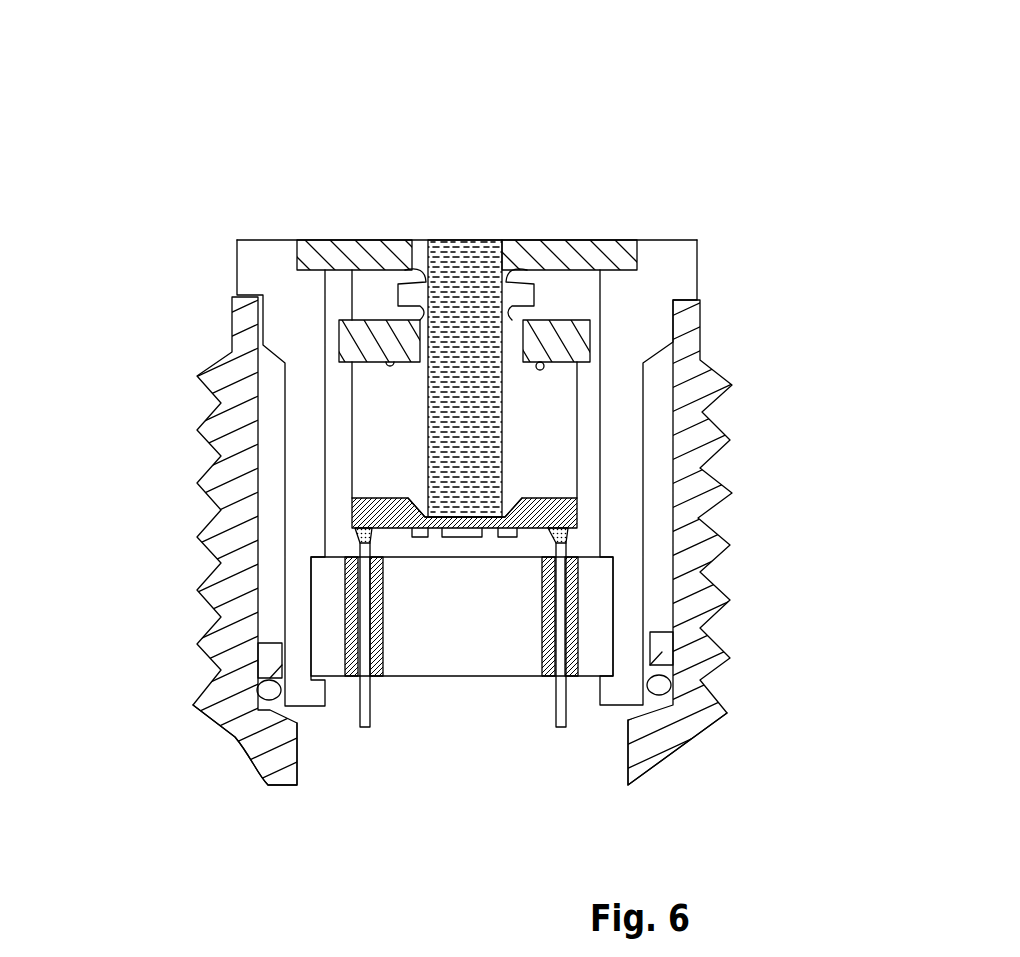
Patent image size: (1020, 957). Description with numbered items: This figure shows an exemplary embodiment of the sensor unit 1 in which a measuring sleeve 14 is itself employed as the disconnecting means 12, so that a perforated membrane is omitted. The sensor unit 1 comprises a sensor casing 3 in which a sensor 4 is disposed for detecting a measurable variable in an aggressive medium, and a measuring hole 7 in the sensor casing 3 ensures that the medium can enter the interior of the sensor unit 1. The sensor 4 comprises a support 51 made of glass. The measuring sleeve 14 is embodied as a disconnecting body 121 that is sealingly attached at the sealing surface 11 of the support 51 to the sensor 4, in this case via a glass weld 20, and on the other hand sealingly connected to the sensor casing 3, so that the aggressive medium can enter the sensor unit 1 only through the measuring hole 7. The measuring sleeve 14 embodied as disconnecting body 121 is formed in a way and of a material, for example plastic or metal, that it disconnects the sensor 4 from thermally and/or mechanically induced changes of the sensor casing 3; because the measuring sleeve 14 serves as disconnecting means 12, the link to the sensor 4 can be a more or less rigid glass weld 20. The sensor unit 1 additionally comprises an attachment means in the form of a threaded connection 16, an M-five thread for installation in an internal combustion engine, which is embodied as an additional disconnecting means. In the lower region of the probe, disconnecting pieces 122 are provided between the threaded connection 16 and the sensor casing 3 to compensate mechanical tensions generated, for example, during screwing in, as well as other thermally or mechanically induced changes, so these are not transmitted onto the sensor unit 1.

The sensor unit 1 is at (506, 111).
The sensor casing 3 is at (137, 233).
The sensor 4 is at (183, 570).
The measuring hole 7 is at (459, 250).
The sealing surface 11 is at (566, 367).
The disconnecting means 12 is at (690, 725).
The measuring sleeve 14 is at (337, 240).
The disconnecting body 121 is at (337, 240).
The threaded connection 16 is at (655, 753).
The glass weld 20 is at (541, 362).
The support 51 is at (548, 456).
The disconnecting pieces 122 is at (653, 687).